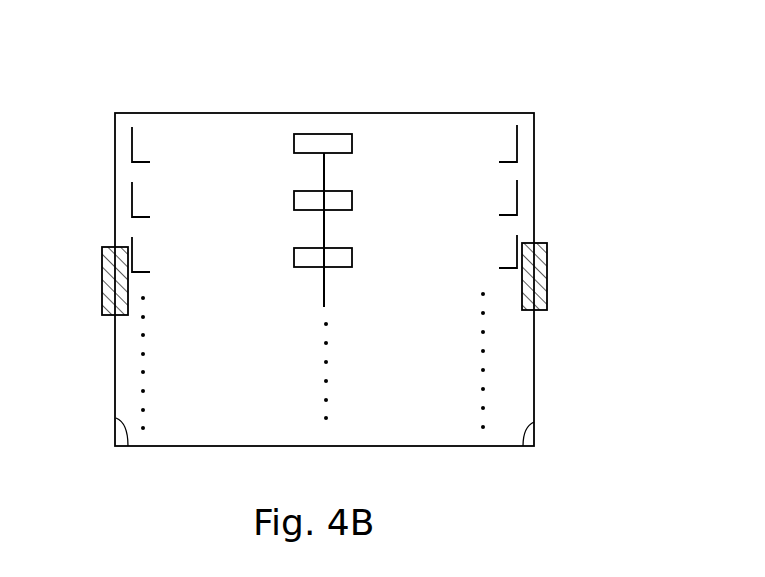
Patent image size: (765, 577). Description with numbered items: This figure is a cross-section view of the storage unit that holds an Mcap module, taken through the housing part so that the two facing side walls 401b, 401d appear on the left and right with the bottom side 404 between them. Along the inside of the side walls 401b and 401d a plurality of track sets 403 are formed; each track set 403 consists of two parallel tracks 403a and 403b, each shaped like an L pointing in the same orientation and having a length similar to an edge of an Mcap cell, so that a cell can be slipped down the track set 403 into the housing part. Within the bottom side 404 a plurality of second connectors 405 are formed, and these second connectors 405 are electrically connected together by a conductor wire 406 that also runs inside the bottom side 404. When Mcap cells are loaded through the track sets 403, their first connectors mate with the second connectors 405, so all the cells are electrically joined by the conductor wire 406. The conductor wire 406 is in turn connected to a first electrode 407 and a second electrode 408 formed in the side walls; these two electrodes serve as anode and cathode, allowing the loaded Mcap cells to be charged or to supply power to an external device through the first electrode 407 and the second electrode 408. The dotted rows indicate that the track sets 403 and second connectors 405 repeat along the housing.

The side wall 401b is at (128, 446).
The side wall 401d is at (523, 446).
The track set 403 is at (325, 144).
The track 403a is at (142, 147).
The track 403b is at (485, 163).
The bottom side 404 is at (458, 187).
The second connector 405 is at (352, 143).
The conductor wire 406 is at (324, 170).
The first electrode 407 is at (102, 288).
The second electrode 408 is at (547, 277).